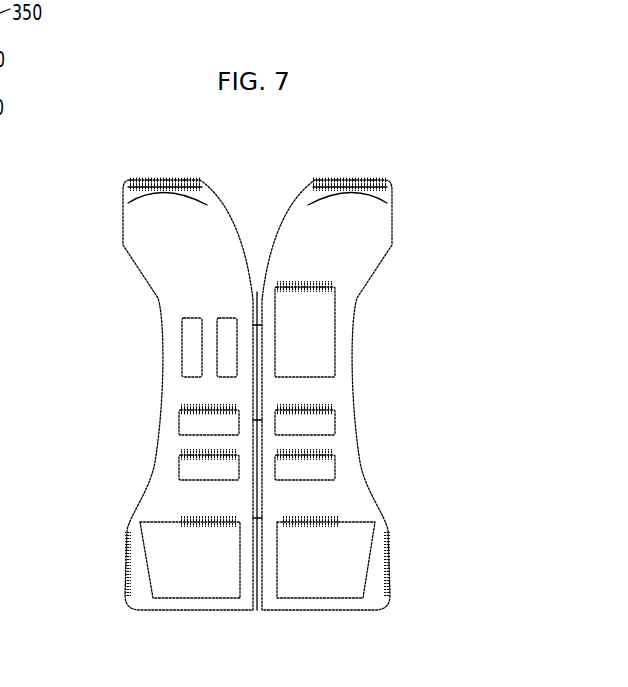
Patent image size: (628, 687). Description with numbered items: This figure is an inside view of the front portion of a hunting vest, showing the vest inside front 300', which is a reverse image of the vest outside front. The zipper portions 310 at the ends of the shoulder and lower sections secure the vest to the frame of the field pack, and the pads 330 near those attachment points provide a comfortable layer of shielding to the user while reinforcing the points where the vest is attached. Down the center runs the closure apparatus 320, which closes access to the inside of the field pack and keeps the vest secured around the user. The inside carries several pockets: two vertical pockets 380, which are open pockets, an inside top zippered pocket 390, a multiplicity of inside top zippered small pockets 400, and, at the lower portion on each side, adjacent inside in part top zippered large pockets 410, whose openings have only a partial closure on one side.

The vest inside front 300' is at (310, 308).
The zipper portions 310 is at (155, 183).
The closure apparatus 320 is at (257, 420).
The pads 330 is at (165, 192).
The vertical pocket 380 is at (217, 357).
The inside top zippered pocket 390 is at (327, 340).
The inside top zippered small pockets 400 is at (179, 467).
The inside in part top zippered large pockets 410 is at (198, 603).